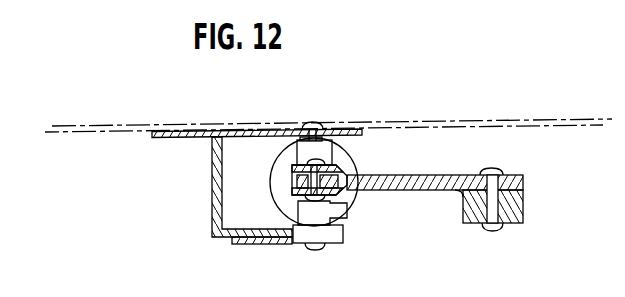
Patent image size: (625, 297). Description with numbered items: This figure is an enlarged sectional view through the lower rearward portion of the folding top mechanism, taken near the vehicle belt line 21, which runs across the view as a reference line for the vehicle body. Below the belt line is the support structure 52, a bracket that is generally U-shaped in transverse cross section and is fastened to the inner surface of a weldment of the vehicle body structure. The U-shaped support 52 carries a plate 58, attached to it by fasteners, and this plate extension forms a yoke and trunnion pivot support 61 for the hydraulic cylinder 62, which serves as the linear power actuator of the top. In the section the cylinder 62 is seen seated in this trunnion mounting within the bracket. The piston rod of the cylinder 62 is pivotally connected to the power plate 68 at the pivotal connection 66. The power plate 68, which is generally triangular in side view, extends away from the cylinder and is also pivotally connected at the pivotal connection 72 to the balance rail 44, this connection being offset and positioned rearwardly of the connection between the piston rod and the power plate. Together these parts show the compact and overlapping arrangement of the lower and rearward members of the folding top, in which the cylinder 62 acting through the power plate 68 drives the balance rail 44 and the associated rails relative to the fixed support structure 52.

The vehicle belt line 21 is at (385, 126).
The support structure 52 is at (213, 179).
The plate 58 is at (287, 245).
The yoke and trunnion pivot support 61 is at (315, 121).
The hydraulic cylinder 62 is at (337, 151).
The pivotal connection between piston rod and power plate 66 is at (347, 211).
The power plate 68 is at (411, 175).
The balance rail 44 is at (524, 210).
The pivotal connection between power plate and balance rail 72 is at (497, 232).